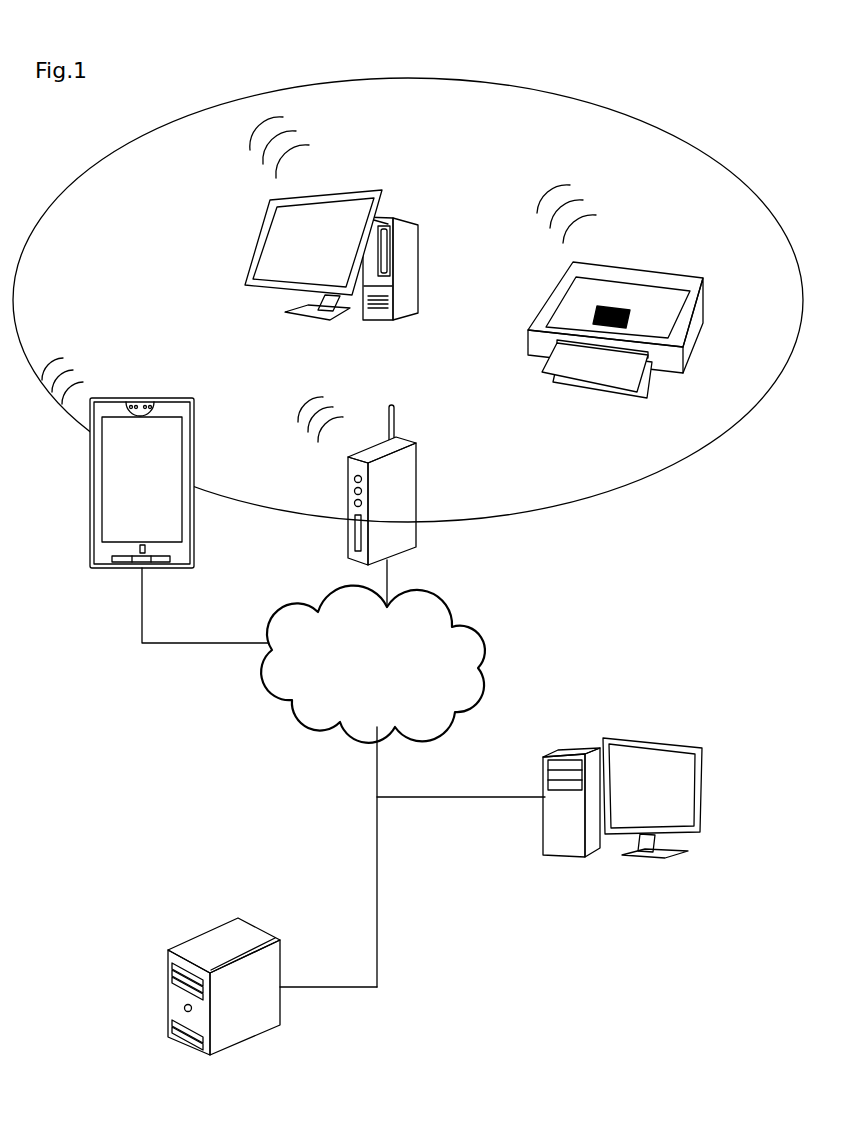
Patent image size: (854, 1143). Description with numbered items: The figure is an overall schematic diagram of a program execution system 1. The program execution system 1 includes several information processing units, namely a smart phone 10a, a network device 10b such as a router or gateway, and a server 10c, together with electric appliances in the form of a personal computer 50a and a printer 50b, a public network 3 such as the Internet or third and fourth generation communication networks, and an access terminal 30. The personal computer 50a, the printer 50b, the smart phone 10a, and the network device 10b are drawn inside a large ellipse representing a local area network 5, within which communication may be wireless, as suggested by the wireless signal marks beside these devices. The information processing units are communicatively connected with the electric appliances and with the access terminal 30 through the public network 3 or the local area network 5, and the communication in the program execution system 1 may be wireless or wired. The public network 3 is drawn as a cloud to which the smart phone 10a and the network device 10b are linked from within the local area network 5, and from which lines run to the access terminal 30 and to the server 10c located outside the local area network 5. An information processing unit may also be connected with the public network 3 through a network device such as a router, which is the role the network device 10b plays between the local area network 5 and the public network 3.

The program execution system 1 is at (684, 1056).
The public network 3 is at (453, 606).
The local area network 5 is at (730, 172).
The smart phone 10a is at (137, 397).
The network device 10b is at (420, 478).
The server 10c is at (240, 916).
The access terminal 30 is at (685, 745).
The personal computer 50a is at (373, 186).
The printer 50b is at (612, 263).